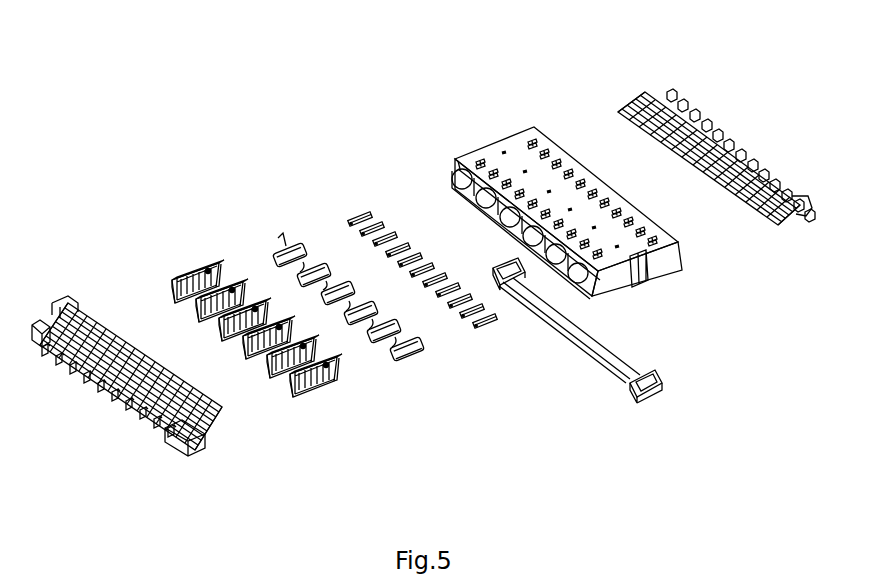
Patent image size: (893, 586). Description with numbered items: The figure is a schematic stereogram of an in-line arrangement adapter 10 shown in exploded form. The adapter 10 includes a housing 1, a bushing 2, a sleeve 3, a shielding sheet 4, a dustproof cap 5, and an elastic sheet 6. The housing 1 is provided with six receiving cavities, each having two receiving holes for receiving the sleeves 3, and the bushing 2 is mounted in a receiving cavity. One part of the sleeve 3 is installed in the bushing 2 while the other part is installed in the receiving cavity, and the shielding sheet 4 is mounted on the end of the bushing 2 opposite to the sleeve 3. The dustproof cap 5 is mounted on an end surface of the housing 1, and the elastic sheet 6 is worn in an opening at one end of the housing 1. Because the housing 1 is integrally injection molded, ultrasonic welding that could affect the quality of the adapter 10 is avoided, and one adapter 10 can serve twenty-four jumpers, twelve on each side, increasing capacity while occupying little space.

The adapter 10 is at (465, 66).
The housing 1 is at (655, 263).
The bushing 2 is at (315, 394).
The sleeve 3 is at (490, 330).
The shielding sheet 4 is at (412, 360).
The dustproof cap 5 is at (200, 443).
The elastic sheet 6 is at (580, 353).